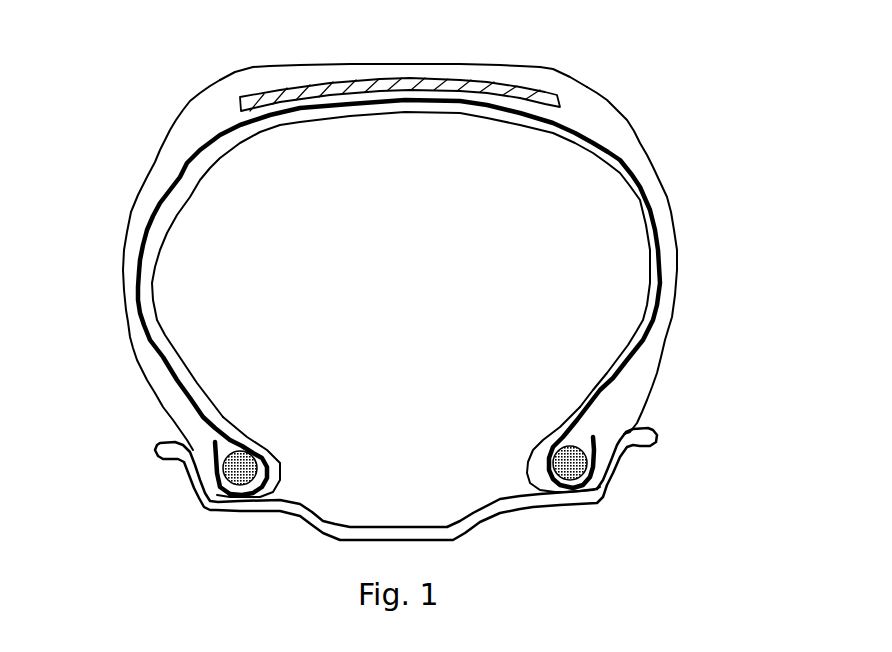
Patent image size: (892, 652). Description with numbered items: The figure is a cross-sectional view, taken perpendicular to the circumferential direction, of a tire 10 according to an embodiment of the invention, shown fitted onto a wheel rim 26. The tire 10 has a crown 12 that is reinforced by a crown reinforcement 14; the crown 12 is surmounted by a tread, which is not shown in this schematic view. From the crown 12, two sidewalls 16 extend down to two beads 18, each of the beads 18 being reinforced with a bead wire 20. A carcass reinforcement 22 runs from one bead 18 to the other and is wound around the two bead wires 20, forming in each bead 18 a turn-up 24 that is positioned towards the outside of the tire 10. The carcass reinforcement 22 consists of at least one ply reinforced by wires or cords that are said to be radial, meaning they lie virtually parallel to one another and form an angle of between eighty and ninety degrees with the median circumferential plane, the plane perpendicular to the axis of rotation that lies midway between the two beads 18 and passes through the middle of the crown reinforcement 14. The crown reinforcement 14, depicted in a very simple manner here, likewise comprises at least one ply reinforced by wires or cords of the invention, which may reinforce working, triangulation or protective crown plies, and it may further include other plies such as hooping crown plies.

The tire 10 is at (700, 207).
The crown 12 is at (416, 53).
The crown reinforcement 14 is at (400, 65).
The sidewalls 16 is at (421, 265).
The beads 18 is at (408, 433).
The bead wire 20 is at (405, 449).
The carcass reinforcement 22 is at (405, 297).
The turn-up 24 is at (404, 436).
The wheel rim 26 is at (408, 484).